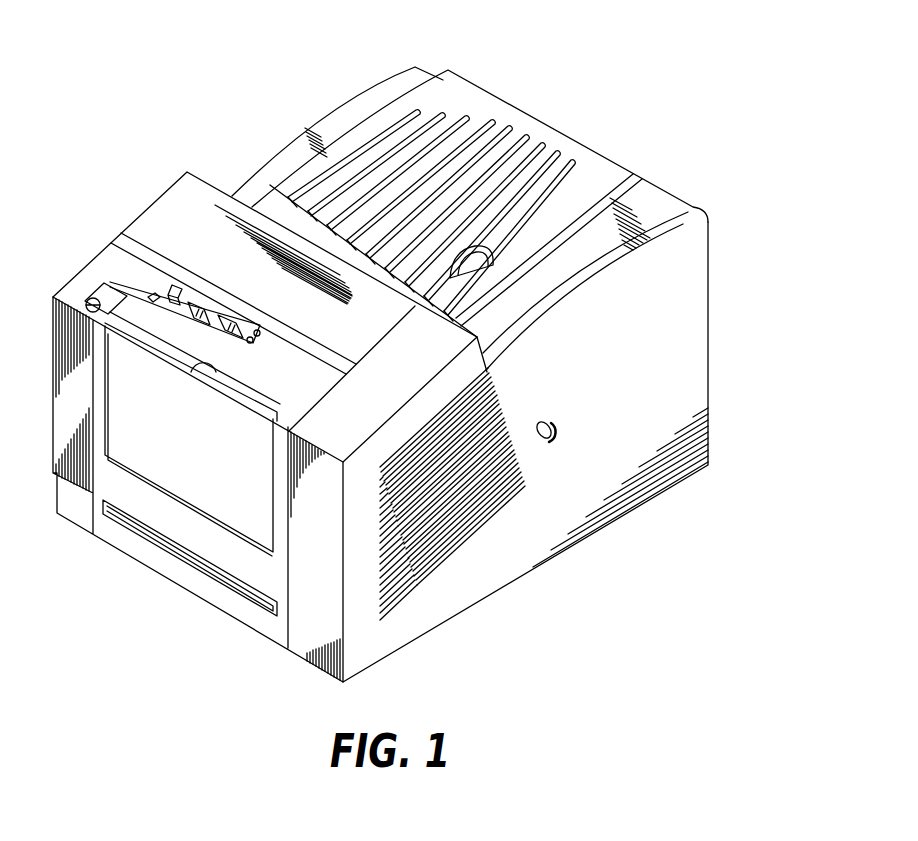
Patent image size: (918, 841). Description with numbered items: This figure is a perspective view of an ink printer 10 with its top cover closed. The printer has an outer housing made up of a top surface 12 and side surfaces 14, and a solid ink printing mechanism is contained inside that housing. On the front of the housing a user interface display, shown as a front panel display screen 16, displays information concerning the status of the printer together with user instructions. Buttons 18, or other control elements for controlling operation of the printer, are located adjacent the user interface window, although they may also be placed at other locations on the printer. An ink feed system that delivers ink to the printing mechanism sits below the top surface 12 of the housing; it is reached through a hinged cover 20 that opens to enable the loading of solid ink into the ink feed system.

The ink printer 10 is at (712, 172).
The top surface 12 is at (658, 195).
The side surfaces 14 is at (685, 310).
The front panel display screen 16 is at (176, 286).
The buttons 18 is at (152, 296).
The hinged cover 20 is at (458, 98).